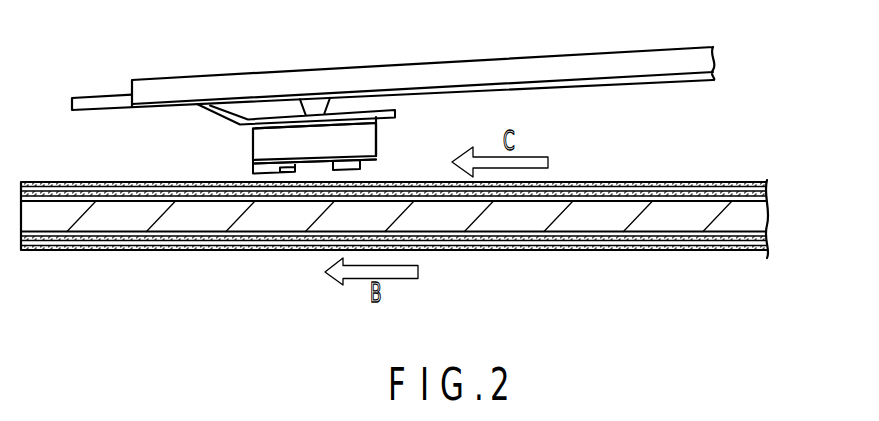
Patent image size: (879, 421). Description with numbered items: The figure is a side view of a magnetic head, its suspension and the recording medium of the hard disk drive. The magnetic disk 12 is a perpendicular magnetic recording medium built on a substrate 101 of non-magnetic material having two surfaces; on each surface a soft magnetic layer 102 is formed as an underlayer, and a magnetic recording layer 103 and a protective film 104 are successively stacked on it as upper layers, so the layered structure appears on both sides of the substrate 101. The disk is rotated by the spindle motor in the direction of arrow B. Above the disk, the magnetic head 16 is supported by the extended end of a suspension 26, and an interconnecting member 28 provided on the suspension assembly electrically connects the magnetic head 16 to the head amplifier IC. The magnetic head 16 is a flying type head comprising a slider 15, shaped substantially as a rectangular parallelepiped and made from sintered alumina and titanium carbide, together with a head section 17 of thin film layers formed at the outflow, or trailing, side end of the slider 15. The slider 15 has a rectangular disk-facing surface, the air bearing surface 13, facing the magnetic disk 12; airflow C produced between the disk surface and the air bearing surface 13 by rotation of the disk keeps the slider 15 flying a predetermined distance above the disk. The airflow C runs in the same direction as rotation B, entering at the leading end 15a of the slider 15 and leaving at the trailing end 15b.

The magnetic disk 12 is at (430, 199).
The disk-facing surface (air bearing surface) 13 is at (307, 167).
The slider 15 is at (306, 92).
The leading end 15a is at (378, 129).
The trailing end 15b is at (276, 161).
The magnetic head 16 is at (385, 143).
The head section 17 is at (212, 133).
The suspension 26 is at (574, 25).
The interconnecting member 28 is at (614, 83).
The substrate 101 is at (647, 226).
The soft magnetic layer 102 is at (430, 219).
The magnetic recording layer 103 is at (703, 273).
The protective film 104 is at (757, 152).